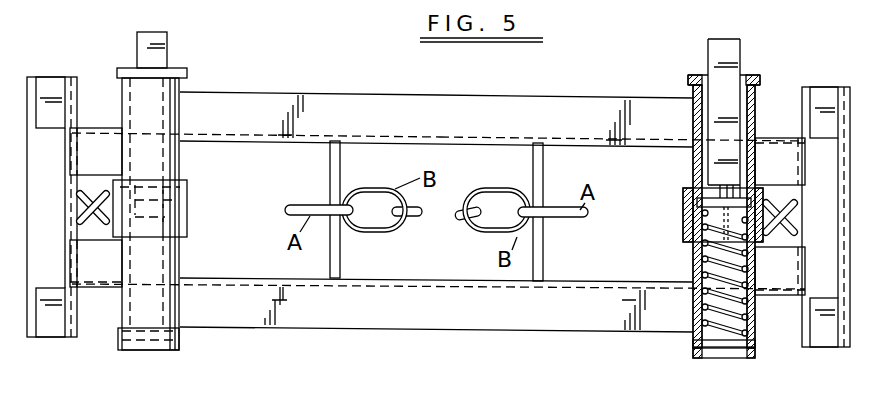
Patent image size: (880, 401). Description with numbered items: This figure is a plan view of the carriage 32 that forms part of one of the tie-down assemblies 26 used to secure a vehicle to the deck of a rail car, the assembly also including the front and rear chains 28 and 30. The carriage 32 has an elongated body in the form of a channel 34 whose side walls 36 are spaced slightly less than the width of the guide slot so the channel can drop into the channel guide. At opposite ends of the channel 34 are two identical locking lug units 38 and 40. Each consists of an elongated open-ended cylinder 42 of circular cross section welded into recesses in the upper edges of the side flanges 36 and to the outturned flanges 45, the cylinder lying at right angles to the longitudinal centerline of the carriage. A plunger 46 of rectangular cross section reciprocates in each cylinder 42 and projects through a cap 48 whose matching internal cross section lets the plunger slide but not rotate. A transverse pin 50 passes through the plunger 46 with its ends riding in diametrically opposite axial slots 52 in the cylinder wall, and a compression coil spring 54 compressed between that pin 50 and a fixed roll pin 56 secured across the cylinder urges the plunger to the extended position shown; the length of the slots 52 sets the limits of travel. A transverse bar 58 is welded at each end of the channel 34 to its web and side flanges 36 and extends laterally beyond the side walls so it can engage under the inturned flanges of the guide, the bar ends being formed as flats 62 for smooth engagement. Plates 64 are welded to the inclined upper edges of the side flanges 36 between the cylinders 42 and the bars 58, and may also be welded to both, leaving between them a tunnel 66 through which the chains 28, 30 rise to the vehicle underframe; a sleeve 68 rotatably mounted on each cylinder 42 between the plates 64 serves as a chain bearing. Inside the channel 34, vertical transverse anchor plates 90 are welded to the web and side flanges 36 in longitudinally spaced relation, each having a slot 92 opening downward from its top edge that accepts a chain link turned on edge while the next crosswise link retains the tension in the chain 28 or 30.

The tie-down assembly 26 is at (220, 90).
The front chain 28 is at (778, 240).
The rear chain 30 is at (96, 226).
The carriage 32 is at (294, 91).
The channel 34 is at (607, 105).
The side walls 36 is at (245, 143).
The locking lug unit 38 is at (749, 364).
The locking lug unit 40 is at (178, 354).
The cylinder 42 is at (120, 353).
The outturned flanges 45 is at (452, 103).
The plunger 46 is at (157, 42).
The cap 48 is at (118, 73).
The transverse pin 50 is at (698, 203).
The axially extending slots 52 is at (700, 224).
The compression coil spring 54 is at (718, 262).
The roll pin 56 is at (693, 343).
The transverse bar 58 is at (43, 142).
The flats 62 is at (52, 327).
The plates 64 is at (99, 130).
The tunnel 66 is at (97, 182).
The sleeve 68 is at (189, 221).
The anchor plates 90 is at (332, 177).
The slot 92 is at (336, 208).